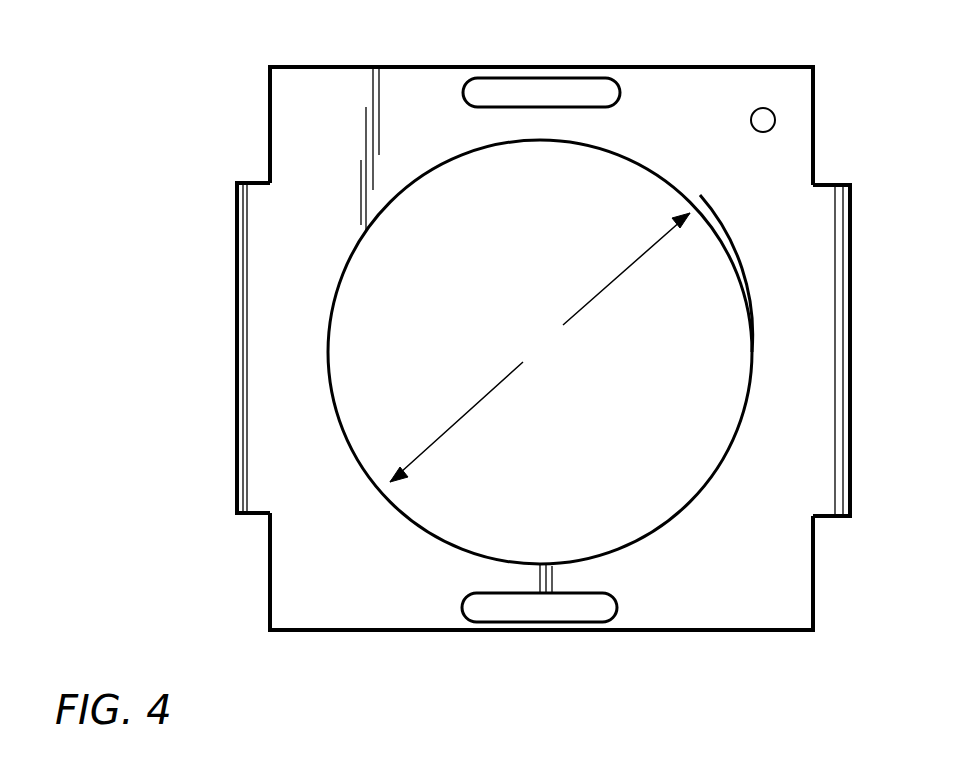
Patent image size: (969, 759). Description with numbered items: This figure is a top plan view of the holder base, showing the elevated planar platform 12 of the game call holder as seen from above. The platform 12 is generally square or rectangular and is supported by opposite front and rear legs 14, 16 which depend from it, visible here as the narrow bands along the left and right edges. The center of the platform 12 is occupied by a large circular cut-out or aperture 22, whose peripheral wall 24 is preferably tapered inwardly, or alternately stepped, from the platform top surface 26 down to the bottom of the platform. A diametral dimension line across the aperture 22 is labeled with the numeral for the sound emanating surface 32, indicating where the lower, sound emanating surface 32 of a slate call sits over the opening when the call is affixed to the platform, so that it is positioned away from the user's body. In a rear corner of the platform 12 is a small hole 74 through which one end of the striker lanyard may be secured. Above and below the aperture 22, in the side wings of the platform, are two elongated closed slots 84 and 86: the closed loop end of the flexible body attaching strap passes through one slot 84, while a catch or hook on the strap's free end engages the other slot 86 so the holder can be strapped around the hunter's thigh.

The planar platform 12 is at (331, 85).
The front leg 14 is at (237, 250).
The rear leg 16 is at (850, 336).
The circular aperture 22 is at (540, 352).
The peripheral wall 24 is at (733, 263).
The platform top surface 26 is at (341, 567).
The sound emanating surface 32 is at (540, 347).
The hole 74 is at (755, 108).
The elongated closed slot 84 is at (613, 598).
The elongated closed slot 86 is at (610, 102).